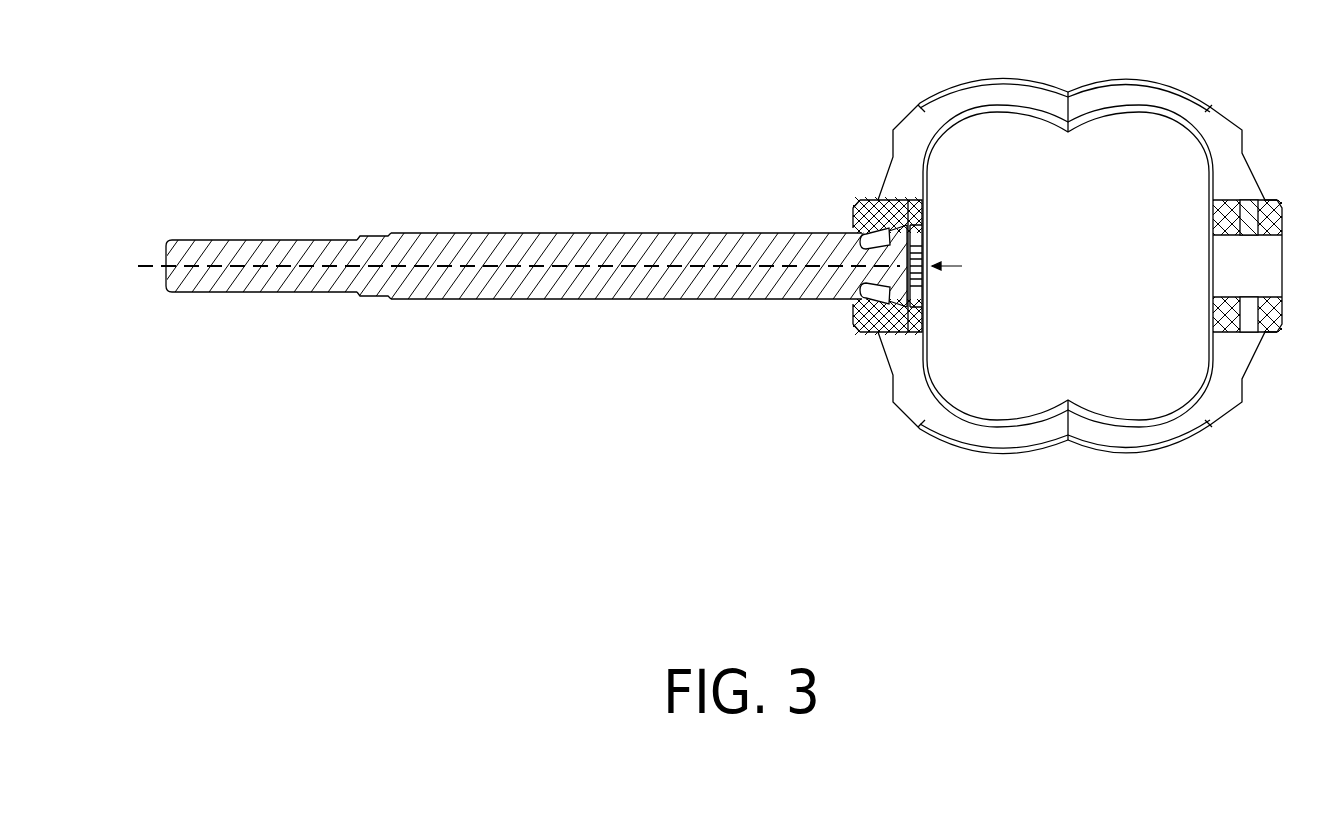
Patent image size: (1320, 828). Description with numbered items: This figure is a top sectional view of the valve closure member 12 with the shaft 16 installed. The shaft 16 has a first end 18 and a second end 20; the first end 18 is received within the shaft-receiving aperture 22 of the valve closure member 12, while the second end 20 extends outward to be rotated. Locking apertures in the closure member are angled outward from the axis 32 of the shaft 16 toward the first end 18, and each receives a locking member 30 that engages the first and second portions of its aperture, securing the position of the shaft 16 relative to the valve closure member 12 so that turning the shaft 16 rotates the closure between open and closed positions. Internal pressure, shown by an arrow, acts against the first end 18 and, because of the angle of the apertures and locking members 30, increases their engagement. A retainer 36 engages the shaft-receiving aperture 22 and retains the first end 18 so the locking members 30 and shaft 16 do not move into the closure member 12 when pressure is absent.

The valve closure member 12 is at (1097, 100).
The shaft 16 is at (585, 233).
The first end 18 is at (903, 266).
The second end 20 is at (172, 253).
The shaft-receiving aperture 22 is at (877, 227).
The locking member 30 is at (860, 242).
The axis 32 is at (270, 265).
The retainer 36 is at (914, 295).